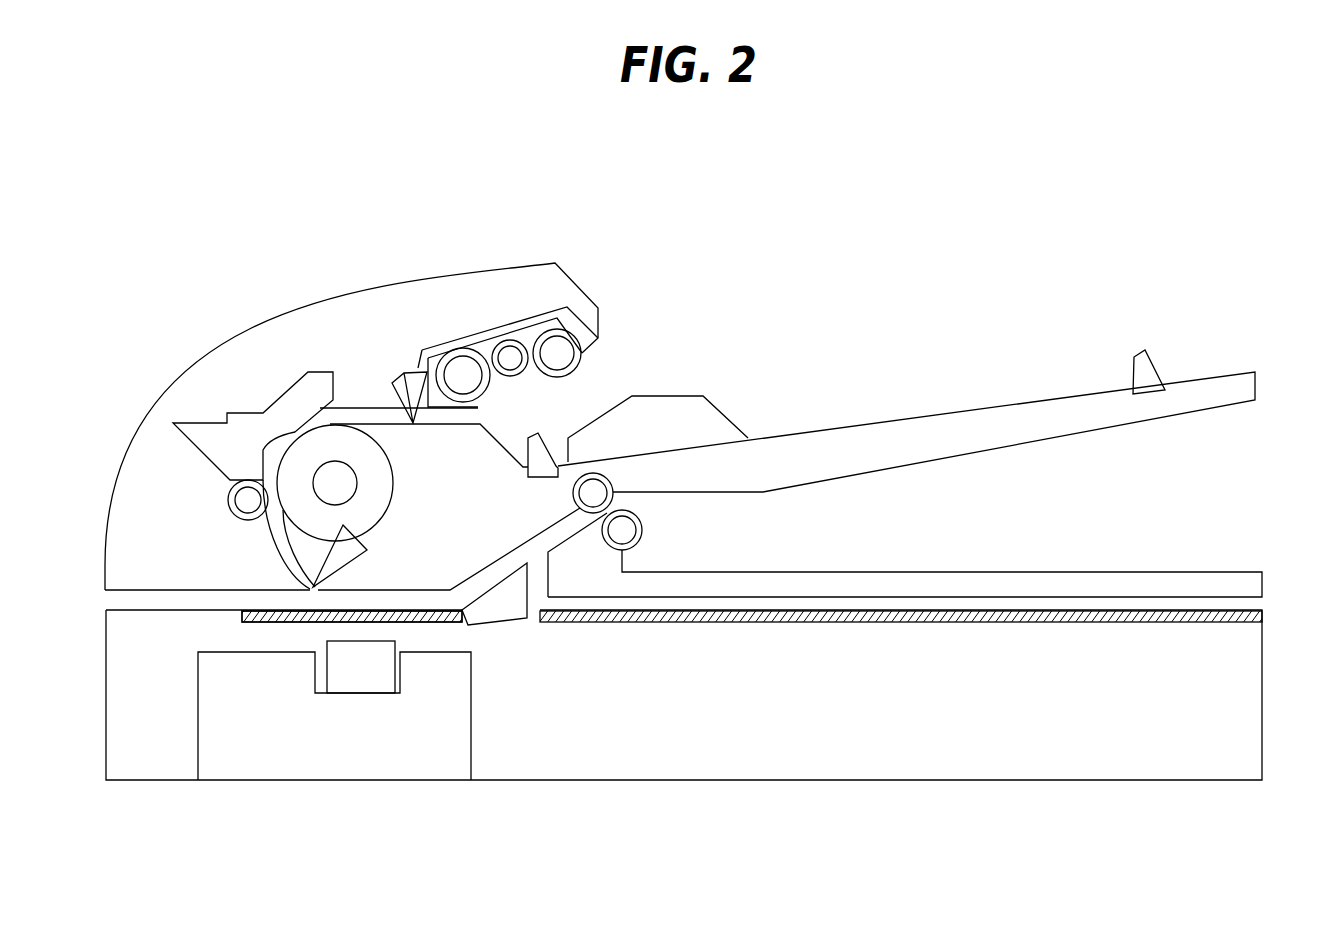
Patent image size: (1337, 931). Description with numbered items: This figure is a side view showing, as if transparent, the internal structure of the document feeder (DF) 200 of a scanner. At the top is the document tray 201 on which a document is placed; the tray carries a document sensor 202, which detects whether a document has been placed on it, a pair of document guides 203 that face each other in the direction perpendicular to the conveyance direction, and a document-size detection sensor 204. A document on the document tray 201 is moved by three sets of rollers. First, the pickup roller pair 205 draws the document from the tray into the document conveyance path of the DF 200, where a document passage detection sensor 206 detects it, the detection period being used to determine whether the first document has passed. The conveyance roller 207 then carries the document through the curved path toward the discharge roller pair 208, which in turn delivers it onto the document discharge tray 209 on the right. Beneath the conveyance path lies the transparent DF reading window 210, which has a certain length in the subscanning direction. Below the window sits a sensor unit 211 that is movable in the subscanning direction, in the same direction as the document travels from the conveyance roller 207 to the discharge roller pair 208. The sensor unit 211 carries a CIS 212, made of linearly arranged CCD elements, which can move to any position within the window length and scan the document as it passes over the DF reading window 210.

The document feeder (DF) 200 is at (782, 214).
The document tray 201 is at (900, 430).
The document sensor 202 is at (548, 448).
The document guides 203 is at (722, 410).
The document-size detection sensor 204 is at (1145, 350).
The pickup roller pair 205 is at (553, 328).
The document passage detection sensor 206 is at (413, 370).
The conveyance roller 207 is at (363, 443).
The discharge roller pair 208 is at (613, 495).
The document discharge tray 209 is at (929, 580).
The DF reading window 210 is at (268, 622).
The sensor unit 211 is at (415, 760).
The CIS (Contact Image Sensor) 212 is at (353, 685).